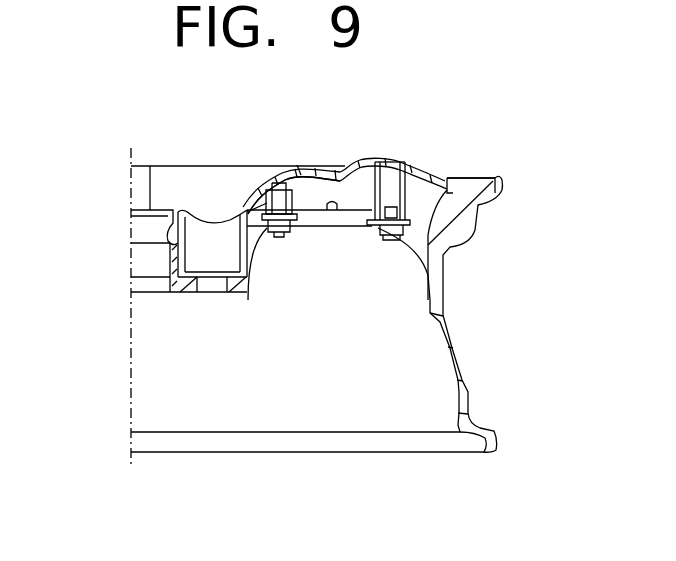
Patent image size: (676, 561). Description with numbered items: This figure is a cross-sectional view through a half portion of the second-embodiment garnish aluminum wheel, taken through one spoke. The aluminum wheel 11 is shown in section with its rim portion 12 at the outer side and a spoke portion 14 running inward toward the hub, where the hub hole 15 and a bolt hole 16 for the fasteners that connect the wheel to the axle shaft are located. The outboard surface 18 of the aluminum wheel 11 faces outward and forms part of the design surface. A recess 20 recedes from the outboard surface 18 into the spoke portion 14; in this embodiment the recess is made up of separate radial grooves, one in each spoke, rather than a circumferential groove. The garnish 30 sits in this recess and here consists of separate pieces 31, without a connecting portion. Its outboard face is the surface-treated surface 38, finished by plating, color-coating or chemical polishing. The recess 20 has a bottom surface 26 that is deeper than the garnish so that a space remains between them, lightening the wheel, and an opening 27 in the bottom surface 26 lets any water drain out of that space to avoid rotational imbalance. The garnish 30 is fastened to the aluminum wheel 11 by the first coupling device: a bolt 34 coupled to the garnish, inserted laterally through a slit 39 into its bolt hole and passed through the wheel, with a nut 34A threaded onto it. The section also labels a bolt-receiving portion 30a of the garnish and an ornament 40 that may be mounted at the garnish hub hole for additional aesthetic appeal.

The aluminum wheel 11 is at (500, 178).
The rim portion 12 is at (447, 323).
The spoke portion 14 is at (367, 228).
The hub hole 15 is at (170, 265).
The bolt hole 16 is at (203, 292).
The outboard surface 18 is at (472, 178).
The recess 20 is at (447, 175).
The bottom surface 26 is at (334, 227).
The opening 27 is at (310, 227).
The garnish 30 is at (327, 167).
The pieces 31 is at (294, 195).
The bolt receiving portion 30a is at (378, 170).
The bolt 34 is at (268, 180).
The nut 34A is at (284, 238).
The surface-treated surface 38 is at (299, 158).
The slit 39 is at (297, 167).
The ornament 40 is at (150, 166).